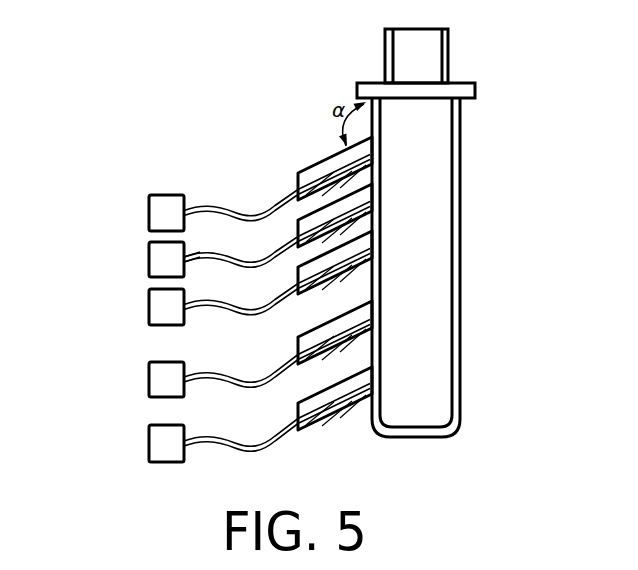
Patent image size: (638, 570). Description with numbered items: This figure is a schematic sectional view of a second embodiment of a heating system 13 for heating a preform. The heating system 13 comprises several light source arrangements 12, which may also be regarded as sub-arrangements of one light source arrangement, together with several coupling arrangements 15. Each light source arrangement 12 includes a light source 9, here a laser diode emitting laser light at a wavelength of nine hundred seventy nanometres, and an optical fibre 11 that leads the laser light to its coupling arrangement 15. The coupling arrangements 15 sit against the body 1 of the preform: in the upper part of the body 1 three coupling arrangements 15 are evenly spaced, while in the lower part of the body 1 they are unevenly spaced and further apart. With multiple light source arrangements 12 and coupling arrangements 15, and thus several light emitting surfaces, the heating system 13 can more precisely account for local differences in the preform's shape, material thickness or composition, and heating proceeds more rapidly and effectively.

The body 1 is at (518, 127).
The light source 9 is at (180, 249).
The optical fibre 11 is at (275, 235).
The light source arrangement 12 is at (136, 213).
The heating system 13 is at (201, 262).
The coupling arrangement 15 is at (300, 172).